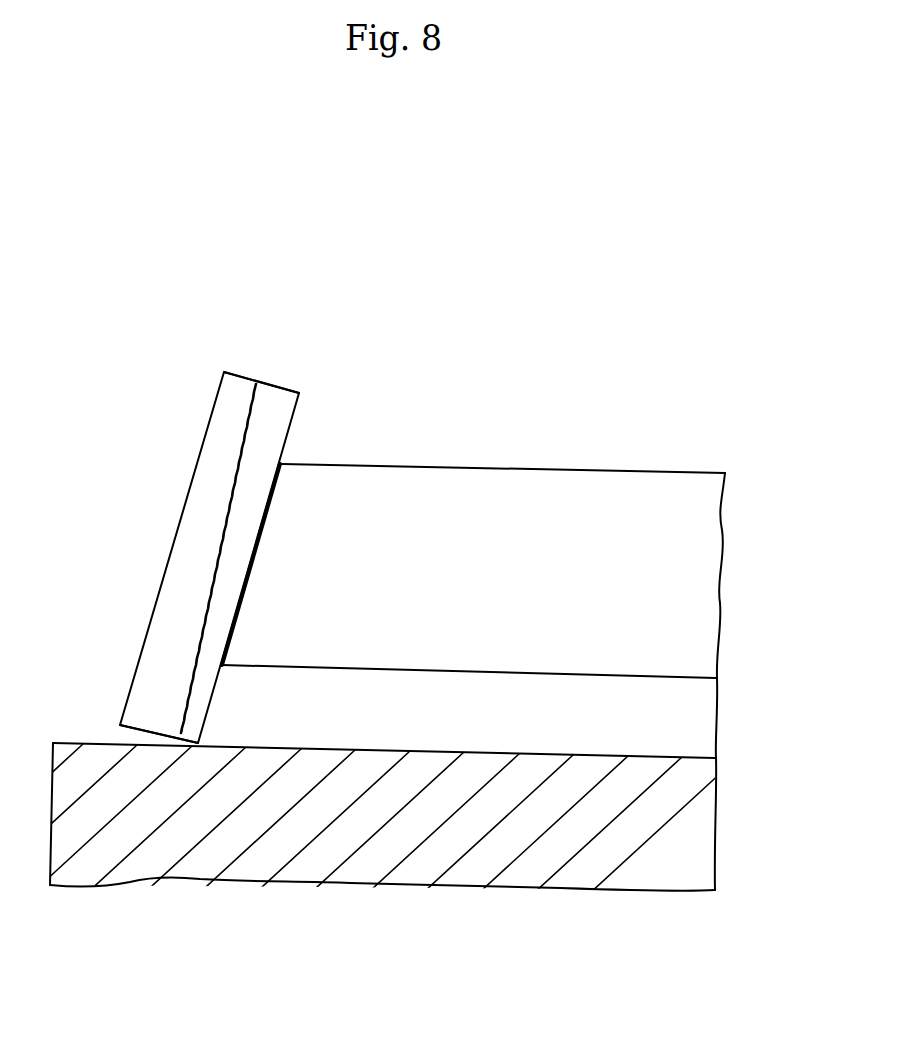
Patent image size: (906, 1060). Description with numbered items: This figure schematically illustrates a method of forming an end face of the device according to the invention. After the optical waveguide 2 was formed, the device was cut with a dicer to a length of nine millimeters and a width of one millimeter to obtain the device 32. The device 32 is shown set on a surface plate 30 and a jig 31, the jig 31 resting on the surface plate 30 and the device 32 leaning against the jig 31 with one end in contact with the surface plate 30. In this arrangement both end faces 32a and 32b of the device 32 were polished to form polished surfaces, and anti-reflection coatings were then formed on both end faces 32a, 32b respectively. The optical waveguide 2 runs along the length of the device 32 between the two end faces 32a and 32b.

The optical waveguide 2 is at (207, 550).
The surface plate 30 is at (700, 814).
The jig 31 is at (700, 603).
The device 32 is at (211, 530).
The end face 32a is at (140, 727).
The end face 32b is at (282, 388).